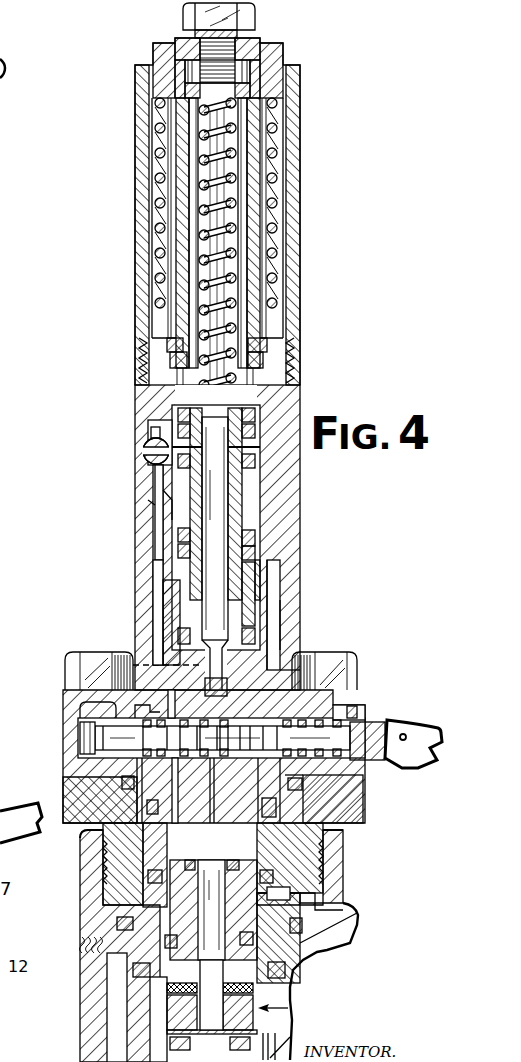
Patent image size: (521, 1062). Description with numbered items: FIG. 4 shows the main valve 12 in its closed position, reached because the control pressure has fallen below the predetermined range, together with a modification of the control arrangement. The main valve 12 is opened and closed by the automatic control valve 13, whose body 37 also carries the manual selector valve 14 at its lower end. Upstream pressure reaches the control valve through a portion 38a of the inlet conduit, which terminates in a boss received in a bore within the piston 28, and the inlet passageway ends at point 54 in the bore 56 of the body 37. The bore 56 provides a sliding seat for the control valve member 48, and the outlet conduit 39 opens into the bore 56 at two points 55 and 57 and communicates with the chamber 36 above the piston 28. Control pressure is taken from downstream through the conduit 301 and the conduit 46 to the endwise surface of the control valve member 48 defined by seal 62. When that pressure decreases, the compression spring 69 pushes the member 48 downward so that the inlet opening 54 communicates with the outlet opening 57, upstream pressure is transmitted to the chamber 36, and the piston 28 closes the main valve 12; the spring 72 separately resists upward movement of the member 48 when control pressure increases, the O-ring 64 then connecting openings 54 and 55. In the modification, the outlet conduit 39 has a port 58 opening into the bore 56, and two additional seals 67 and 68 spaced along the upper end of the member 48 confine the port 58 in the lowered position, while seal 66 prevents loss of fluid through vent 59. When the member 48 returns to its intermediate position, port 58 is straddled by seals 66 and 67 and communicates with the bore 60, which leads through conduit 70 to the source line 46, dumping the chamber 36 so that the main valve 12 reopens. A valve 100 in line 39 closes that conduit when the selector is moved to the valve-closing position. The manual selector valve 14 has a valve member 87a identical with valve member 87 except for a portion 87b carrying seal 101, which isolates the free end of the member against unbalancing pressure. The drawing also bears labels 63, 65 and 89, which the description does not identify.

The main valve 12 is at (345, 903).
The automatic control valve 13 is at (302, 509).
The manual selector valve 14 is at (373, 702).
The piston 28 is at (238, 876).
The chamber 36 is at (212, 848).
The control valve body 37 is at (282, 618).
The inlet conduit portion 38a is at (188, 830).
The outlet conduit 39 is at (152, 618).
The control fluid conduit 46 is at (97, 668).
The control valve member 48 is at (214, 558).
The inlet opening 54 is at (296, 518).
The outlet opening 55 is at (163, 577).
The bore 56 is at (256, 582).
The outlet opening 57 is at (156, 505).
The port 58 is at (176, 416).
The vent 59 is at (262, 452).
The bore in valve member 60 is at (211, 517).
The seal 62 is at (352, 704).
The seal ring 63 is at (256, 637).
The O-ring 64 is at (262, 560).
The seal ring 65 is at (256, 540).
The seal 66 is at (256, 464).
The seal 67 is at (256, 430).
The seal 68 is at (256, 412).
The compression spring 69 is at (197, 153).
The conduit 70 is at (228, 685).
The spring 72 is at (160, 222).
The valve member 87 is at (330, 812).
The valve member 87a is at (100, 735).
The portion 87b is at (88, 708).
The handle 89 is at (33, 801).
The valve 100 is at (150, 440).
The seal 101 is at (72, 709).
The control pressure conduit 301 is at (128, 828).